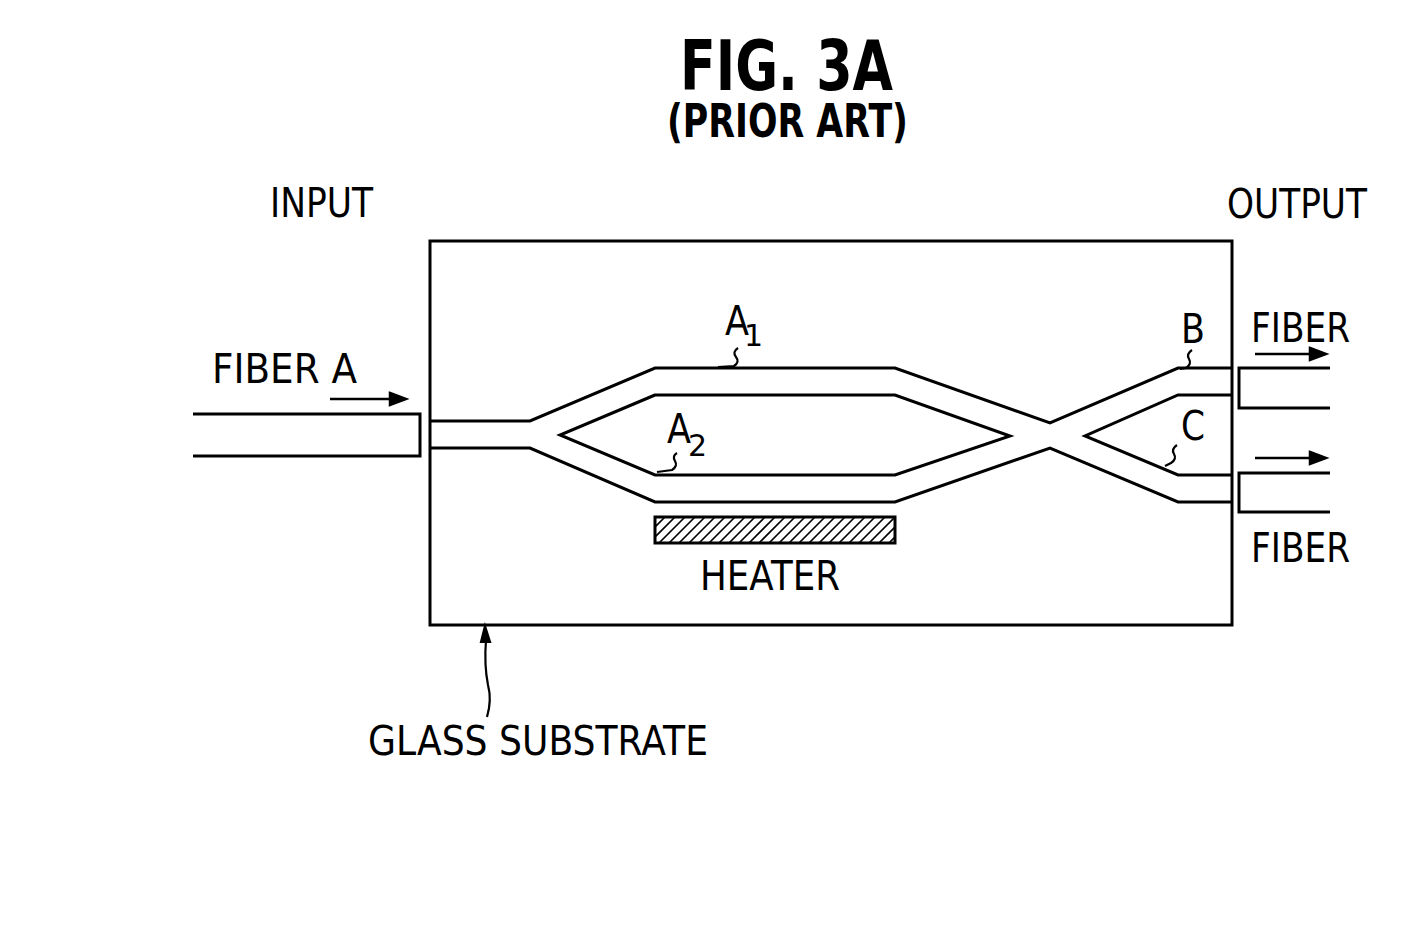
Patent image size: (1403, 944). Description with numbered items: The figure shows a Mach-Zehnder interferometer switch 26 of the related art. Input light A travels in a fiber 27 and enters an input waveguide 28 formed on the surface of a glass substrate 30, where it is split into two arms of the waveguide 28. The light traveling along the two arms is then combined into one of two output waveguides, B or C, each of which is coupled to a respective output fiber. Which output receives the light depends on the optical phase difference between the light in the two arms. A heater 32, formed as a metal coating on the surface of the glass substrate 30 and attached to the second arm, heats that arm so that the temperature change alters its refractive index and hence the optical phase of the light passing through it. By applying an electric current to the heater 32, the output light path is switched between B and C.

The Mach-Zehnder interferometer switch 26 is at (750, 470).
The fiber 27 is at (327, 457).
The input waveguide 28 is at (530, 450).
The glass substrate 30 is at (855, 627).
The heater 32 is at (897, 525).